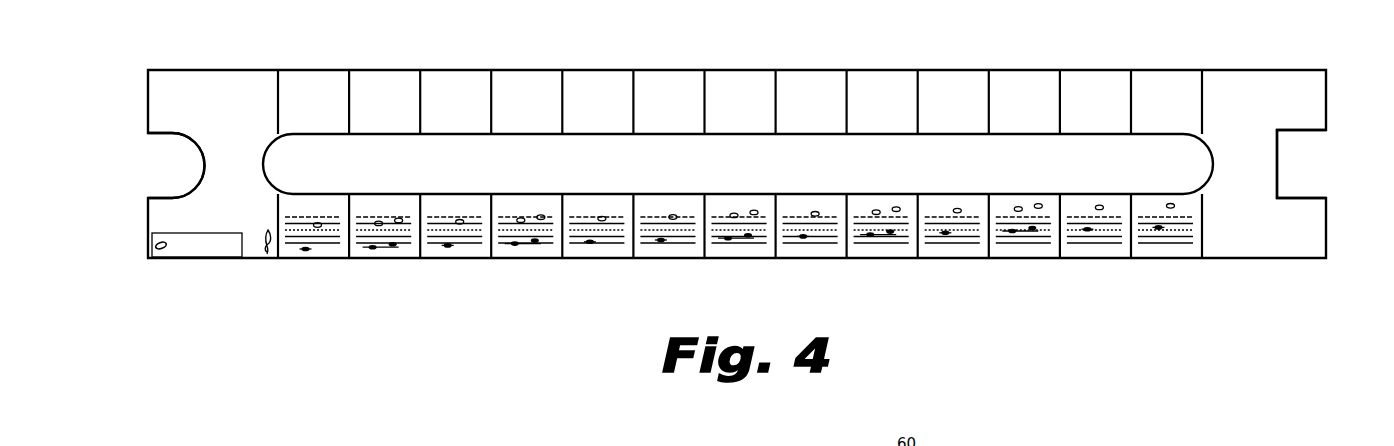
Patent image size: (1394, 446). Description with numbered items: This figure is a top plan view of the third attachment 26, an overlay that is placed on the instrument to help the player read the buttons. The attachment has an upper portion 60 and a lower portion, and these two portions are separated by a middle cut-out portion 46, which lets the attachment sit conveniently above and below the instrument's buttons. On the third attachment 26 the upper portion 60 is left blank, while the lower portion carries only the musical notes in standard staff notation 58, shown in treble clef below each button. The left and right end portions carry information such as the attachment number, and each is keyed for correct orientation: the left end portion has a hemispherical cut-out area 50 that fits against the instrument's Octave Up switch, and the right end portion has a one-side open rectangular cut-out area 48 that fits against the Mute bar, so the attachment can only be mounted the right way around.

The third attachment 26 is at (252, 90).
The upper portion 60 is at (597, 97).
The cut-out portion 46 is at (740, 178).
The musical notes in standard staff notation 58 is at (537, 245).
The hemispherical cut-out area 50 is at (177, 172).
The one-side open rectangular cut-out area 48 is at (1297, 162).